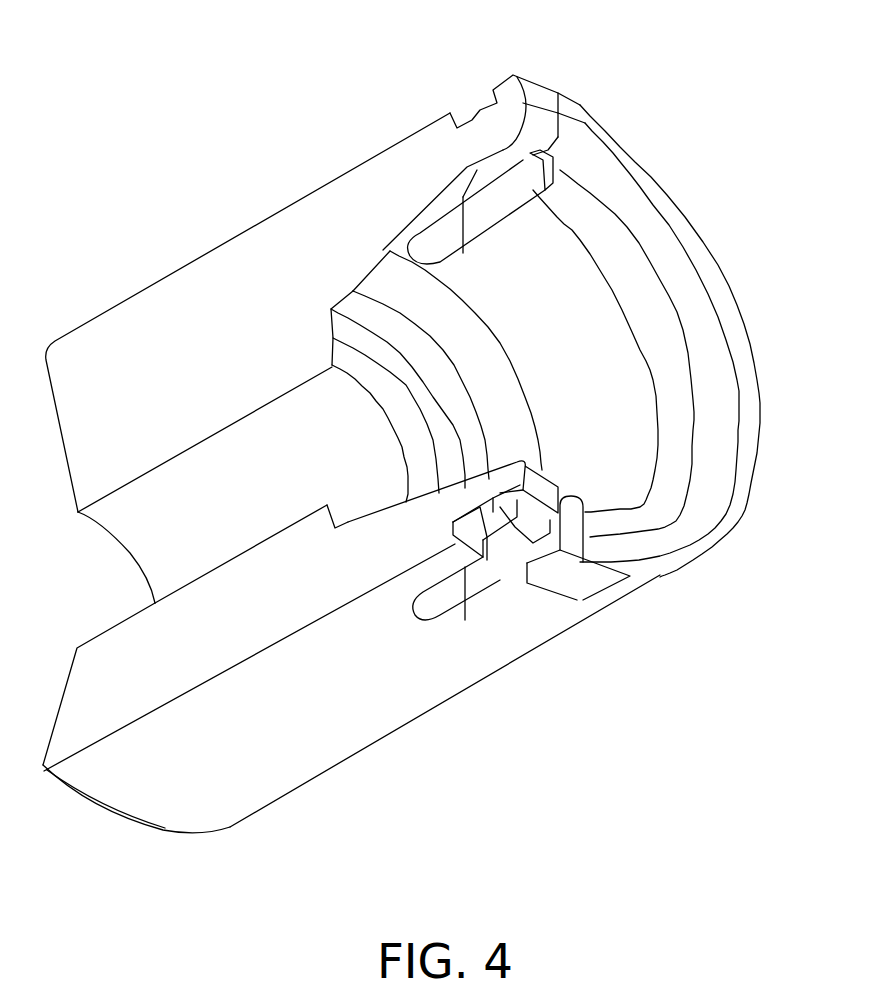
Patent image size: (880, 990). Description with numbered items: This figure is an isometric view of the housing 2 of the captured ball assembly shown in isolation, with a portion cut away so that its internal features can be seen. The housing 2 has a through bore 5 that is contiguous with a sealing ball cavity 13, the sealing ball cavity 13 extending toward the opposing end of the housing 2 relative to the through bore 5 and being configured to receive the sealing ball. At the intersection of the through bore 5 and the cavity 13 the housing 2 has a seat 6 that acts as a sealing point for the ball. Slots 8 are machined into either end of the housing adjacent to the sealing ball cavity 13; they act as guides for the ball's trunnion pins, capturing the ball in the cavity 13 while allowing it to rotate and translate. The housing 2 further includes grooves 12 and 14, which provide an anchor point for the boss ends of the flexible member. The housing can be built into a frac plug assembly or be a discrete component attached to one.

The housing 2 is at (275, 183).
The through bore 5 is at (190, 547).
The seat 6 is at (380, 387).
The slots 8 is at (483, 217).
The groove 12 is at (553, 180).
The sealing ball cavity 13 is at (573, 342).
The groove 14 is at (487, 107).